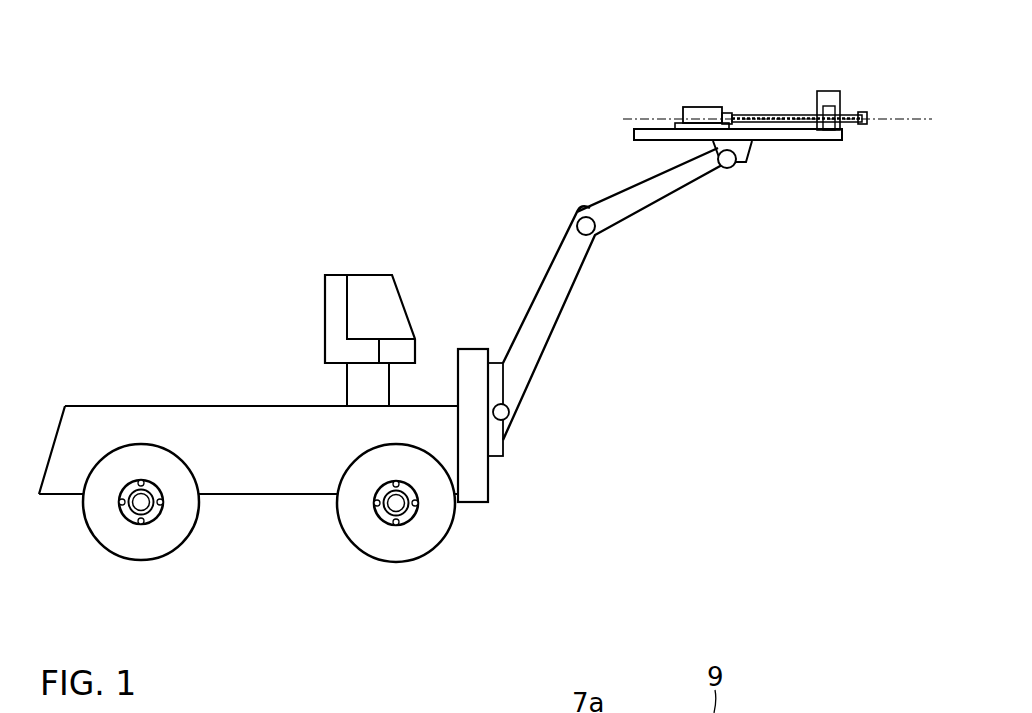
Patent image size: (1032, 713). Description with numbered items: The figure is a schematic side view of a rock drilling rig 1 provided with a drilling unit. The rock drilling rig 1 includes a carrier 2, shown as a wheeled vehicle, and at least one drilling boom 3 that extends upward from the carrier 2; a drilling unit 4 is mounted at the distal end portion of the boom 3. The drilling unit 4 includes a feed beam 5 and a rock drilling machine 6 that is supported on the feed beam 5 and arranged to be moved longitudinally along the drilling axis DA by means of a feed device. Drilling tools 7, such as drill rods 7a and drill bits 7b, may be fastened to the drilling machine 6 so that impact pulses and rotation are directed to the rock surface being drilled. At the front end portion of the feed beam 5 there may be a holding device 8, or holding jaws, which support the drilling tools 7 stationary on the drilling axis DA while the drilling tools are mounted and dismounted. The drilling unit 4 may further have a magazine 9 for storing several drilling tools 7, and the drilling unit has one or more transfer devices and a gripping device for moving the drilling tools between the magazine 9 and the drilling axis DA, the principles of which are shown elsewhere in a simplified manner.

The rock drilling rig 1 is at (137, 291).
The carrier 2 is at (77, 381).
The drilling boom 3 is at (567, 261).
The drilling unit 4 is at (715, 72).
The feed beam 5 is at (782, 141).
The rock drilling machine 6 is at (708, 117).
The drilling tools 7 is at (757, 58).
The drill rods 7a is at (757, 115).
The drill bits 7b is at (867, 123).
The holding device 8 is at (822, 125).
The magazine 9 is at (820, 95).
The drilling axis DA is at (910, 122).